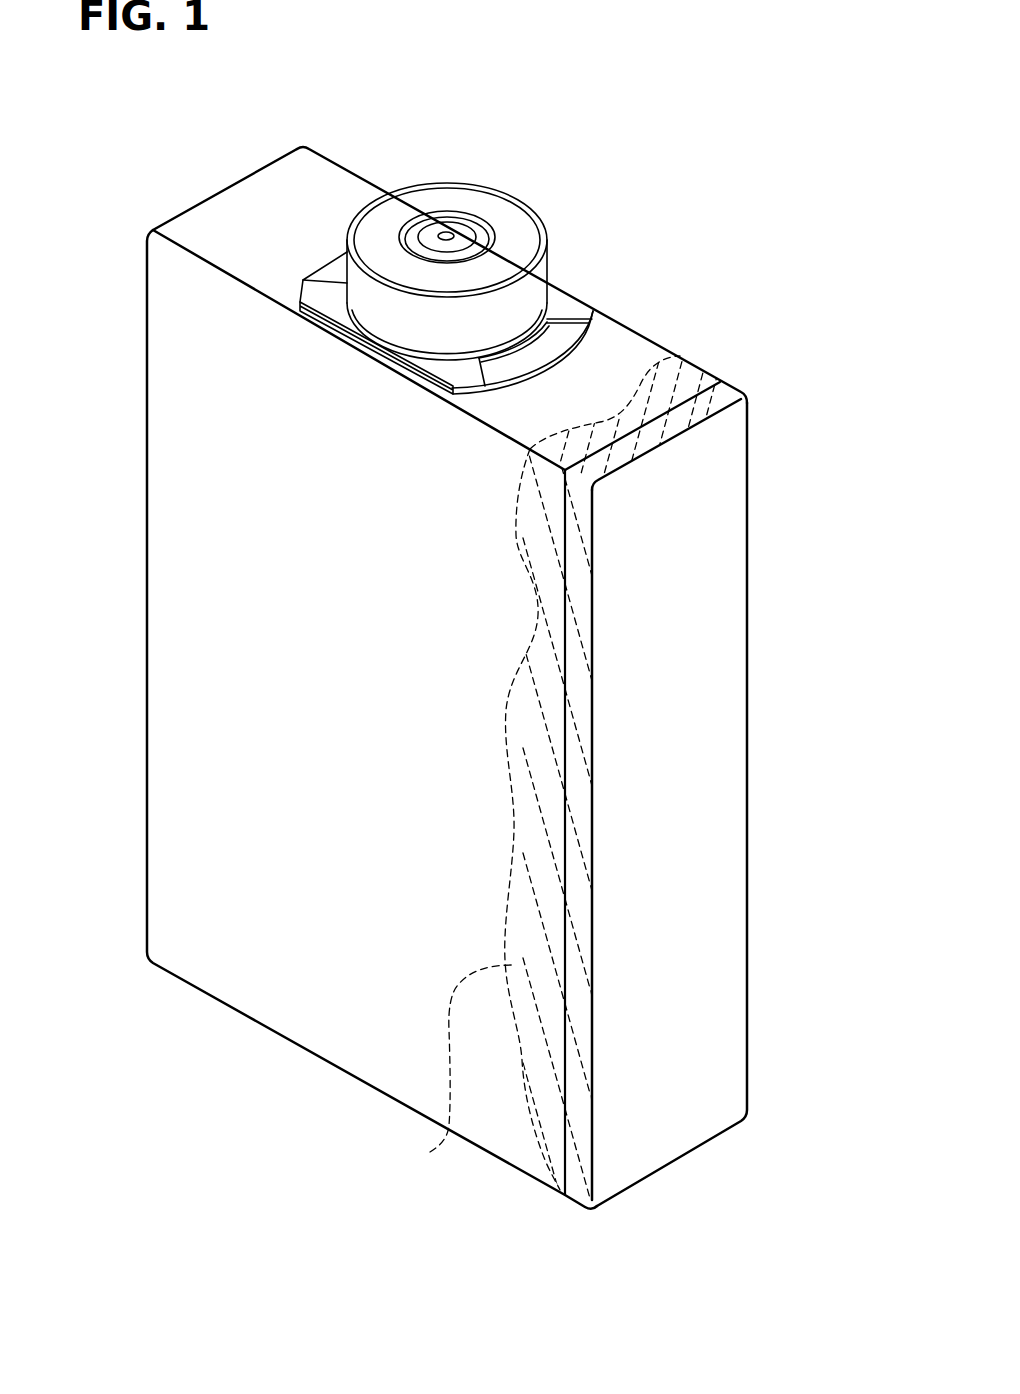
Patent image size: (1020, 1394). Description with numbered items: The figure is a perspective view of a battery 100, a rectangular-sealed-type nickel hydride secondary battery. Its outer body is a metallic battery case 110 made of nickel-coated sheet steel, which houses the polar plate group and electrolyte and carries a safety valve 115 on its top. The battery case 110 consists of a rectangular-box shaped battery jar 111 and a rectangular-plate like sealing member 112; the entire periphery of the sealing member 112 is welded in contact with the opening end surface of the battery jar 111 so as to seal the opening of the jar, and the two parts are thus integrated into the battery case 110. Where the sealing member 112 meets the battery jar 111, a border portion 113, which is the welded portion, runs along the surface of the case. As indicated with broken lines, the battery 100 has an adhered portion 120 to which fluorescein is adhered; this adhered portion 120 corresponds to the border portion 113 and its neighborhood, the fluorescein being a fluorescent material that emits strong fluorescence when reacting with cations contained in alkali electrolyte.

The battery 100 is at (371, 136).
The battery case 110 is at (155, 653).
The battery jar 111 is at (160, 450).
The sealing member 112 is at (717, 700).
The border portion 113 is at (668, 408).
The safety valve 115 is at (468, 200).
The adhered portion 120 is at (430, 1152).